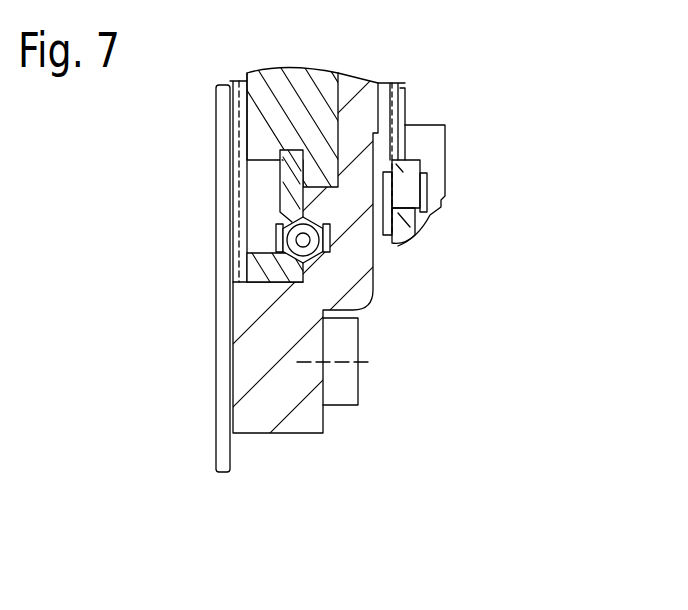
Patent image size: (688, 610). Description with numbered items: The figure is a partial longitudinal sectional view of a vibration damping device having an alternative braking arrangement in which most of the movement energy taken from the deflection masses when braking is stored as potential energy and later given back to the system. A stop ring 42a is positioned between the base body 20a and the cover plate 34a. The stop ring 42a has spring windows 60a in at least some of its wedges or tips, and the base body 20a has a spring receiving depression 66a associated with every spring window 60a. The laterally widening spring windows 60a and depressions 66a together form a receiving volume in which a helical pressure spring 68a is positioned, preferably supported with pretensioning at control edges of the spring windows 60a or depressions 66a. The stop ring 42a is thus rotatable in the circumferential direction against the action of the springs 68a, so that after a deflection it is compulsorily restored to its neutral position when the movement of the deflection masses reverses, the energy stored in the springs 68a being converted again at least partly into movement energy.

The base body 20a is at (247, 345).
The cover plate 34a is at (240, 117).
The stop ring 42a is at (287, 180).
The spring window 60a is at (287, 242).
The spring receiving depression 66a is at (327, 243).
The helical pressure spring 68a is at (303, 217).